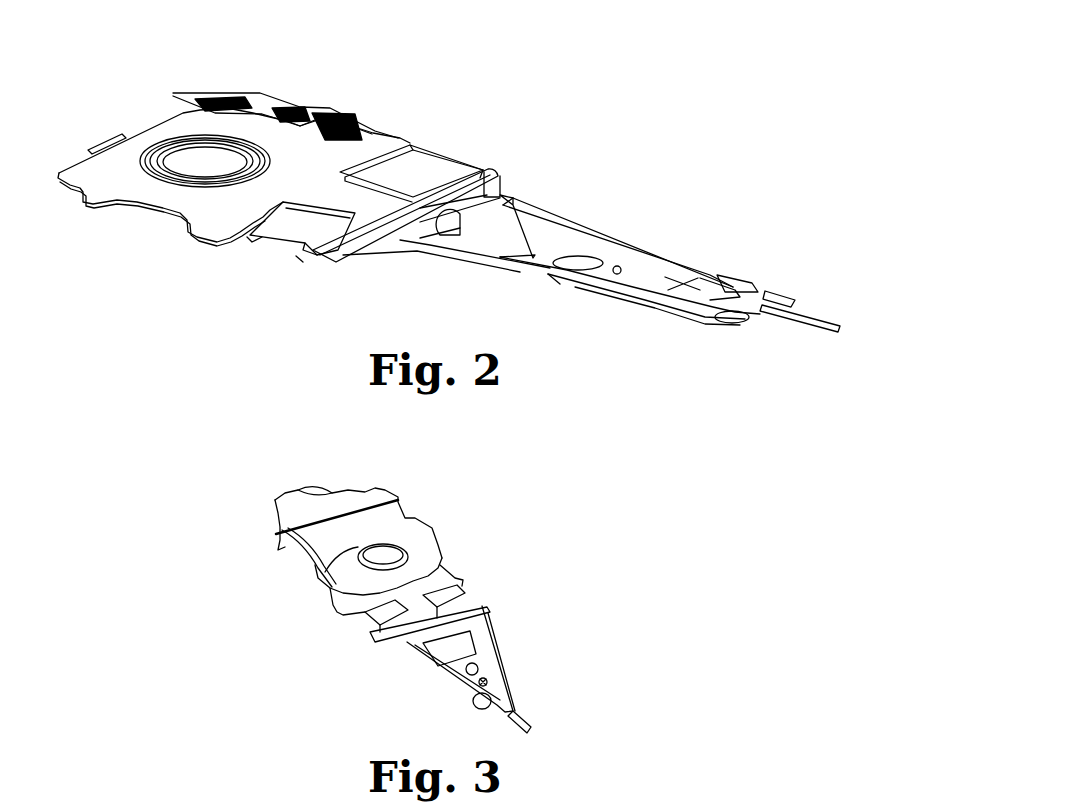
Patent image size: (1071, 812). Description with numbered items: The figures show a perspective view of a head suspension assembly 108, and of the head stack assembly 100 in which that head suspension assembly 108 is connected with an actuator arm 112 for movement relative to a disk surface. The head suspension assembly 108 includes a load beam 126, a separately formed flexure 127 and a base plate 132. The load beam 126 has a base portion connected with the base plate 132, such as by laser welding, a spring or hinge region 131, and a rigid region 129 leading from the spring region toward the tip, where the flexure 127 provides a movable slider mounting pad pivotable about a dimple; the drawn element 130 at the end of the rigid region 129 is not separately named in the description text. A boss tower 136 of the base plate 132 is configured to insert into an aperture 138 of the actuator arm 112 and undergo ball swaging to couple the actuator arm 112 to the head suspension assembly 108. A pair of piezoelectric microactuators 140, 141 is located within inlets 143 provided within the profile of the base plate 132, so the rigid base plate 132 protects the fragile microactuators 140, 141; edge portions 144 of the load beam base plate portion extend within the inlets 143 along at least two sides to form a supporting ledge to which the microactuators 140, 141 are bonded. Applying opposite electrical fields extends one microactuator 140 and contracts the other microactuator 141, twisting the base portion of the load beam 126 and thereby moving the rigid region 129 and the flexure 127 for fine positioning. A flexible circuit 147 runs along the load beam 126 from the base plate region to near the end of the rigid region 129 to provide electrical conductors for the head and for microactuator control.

In FIG. 3, the head stack assembly 100 is at (233, 483).
In FIG. 2, the head suspension assembly 108 is at (695, 58).
In FIG. 3, the head suspension assembly 108 is at (527, 600).
In FIG. 3, the actuator arm 112 is at (405, 518).
In FIG. 2, the load beam 126 is at (640, 270).
In FIG. 2, the flexure 127 is at (665, 312).
In FIG. 3, the flexure 127 is at (510, 685).
In FIG. 2, the rigid region 129 is at (590, 247).
In FIG. 2, the gimbal / dimple 130 is at (723, 280).
In FIG. 3, the gimbal / dimple 130 is at (490, 680).
In FIG. 2, the spring or hinge region 131 is at (508, 198).
In FIG. 2, the base plate 132 is at (392, 135).
In FIG. 3, the base plate 132 is at (452, 565).
In FIG. 2, the boss tower 136 is at (172, 140).
In FIG. 3, the aperture 138 is at (318, 575).
In FIG. 2, the microactuator 140 is at (278, 220).
In FIG. 2, the microactuator 141 is at (410, 182).
In FIG. 2, the inlets 143 is at (422, 150).
In FIG. 2, the edge portions 144 is at (247, 237).
In FIG. 2, the flexible circuit 147 is at (300, 105).